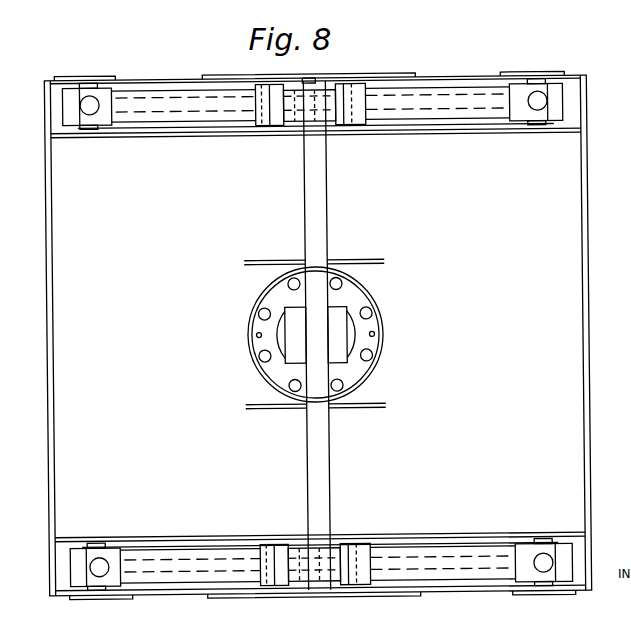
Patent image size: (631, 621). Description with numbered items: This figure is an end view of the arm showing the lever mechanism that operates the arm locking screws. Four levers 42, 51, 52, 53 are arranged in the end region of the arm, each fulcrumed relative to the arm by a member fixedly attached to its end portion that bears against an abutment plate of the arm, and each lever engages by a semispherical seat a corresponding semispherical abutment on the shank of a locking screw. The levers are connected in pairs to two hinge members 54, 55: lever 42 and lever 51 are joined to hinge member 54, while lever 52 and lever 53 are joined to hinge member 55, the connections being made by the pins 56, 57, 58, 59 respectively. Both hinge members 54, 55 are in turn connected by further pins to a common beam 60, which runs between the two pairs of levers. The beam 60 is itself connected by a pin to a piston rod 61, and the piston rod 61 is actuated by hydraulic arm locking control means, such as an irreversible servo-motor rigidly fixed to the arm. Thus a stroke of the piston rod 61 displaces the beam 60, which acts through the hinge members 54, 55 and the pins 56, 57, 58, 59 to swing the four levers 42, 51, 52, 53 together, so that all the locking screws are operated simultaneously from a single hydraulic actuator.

The lever 42 is at (125, 103).
The lever 51 is at (462, 114).
The lever 52 is at (478, 552).
The lever 53 is at (150, 538).
The hinge member 54 is at (320, 105).
The hinge member 55 is at (321, 560).
The pin 56 is at (355, 117).
The pin 57 is at (282, 110).
The pin 58 is at (361, 554).
The pin 59 is at (278, 553).
The beam 60 is at (305, 215).
The piston rod 61 is at (292, 342).